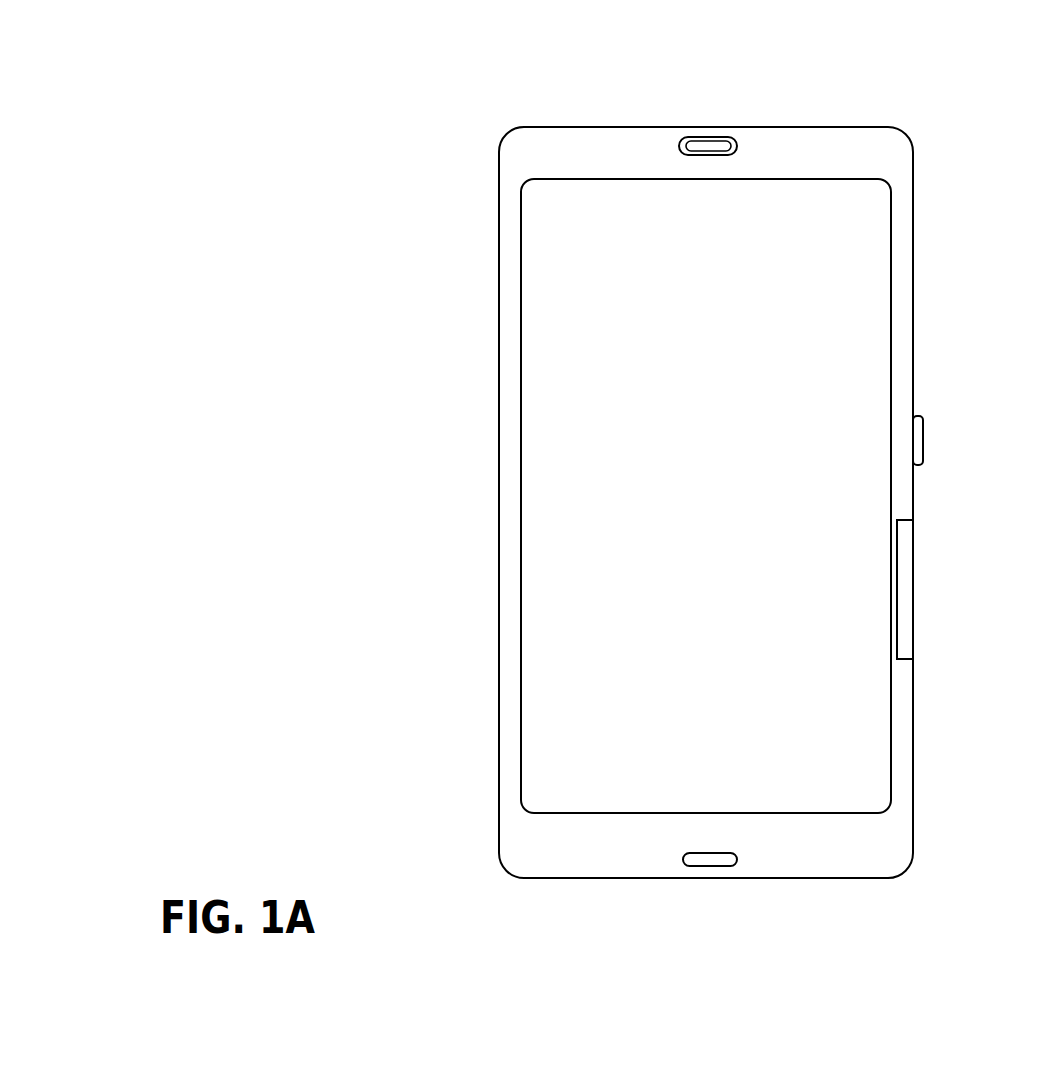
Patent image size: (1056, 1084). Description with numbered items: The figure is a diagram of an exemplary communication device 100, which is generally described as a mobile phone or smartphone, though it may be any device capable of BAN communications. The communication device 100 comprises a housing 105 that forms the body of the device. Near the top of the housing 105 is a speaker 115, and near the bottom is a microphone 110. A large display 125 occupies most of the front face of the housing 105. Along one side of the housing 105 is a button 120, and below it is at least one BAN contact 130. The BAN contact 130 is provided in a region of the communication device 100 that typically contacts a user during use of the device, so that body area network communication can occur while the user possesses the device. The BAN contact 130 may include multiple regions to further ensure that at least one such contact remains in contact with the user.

The communication device 100 is at (253, 110).
The housing 105 is at (499, 443).
The microphone 110 is at (713, 866).
The speaker 115 is at (717, 137).
The button 120 is at (923, 440).
The display 125 is at (891, 287).
The BAN contact 130 is at (907, 606).